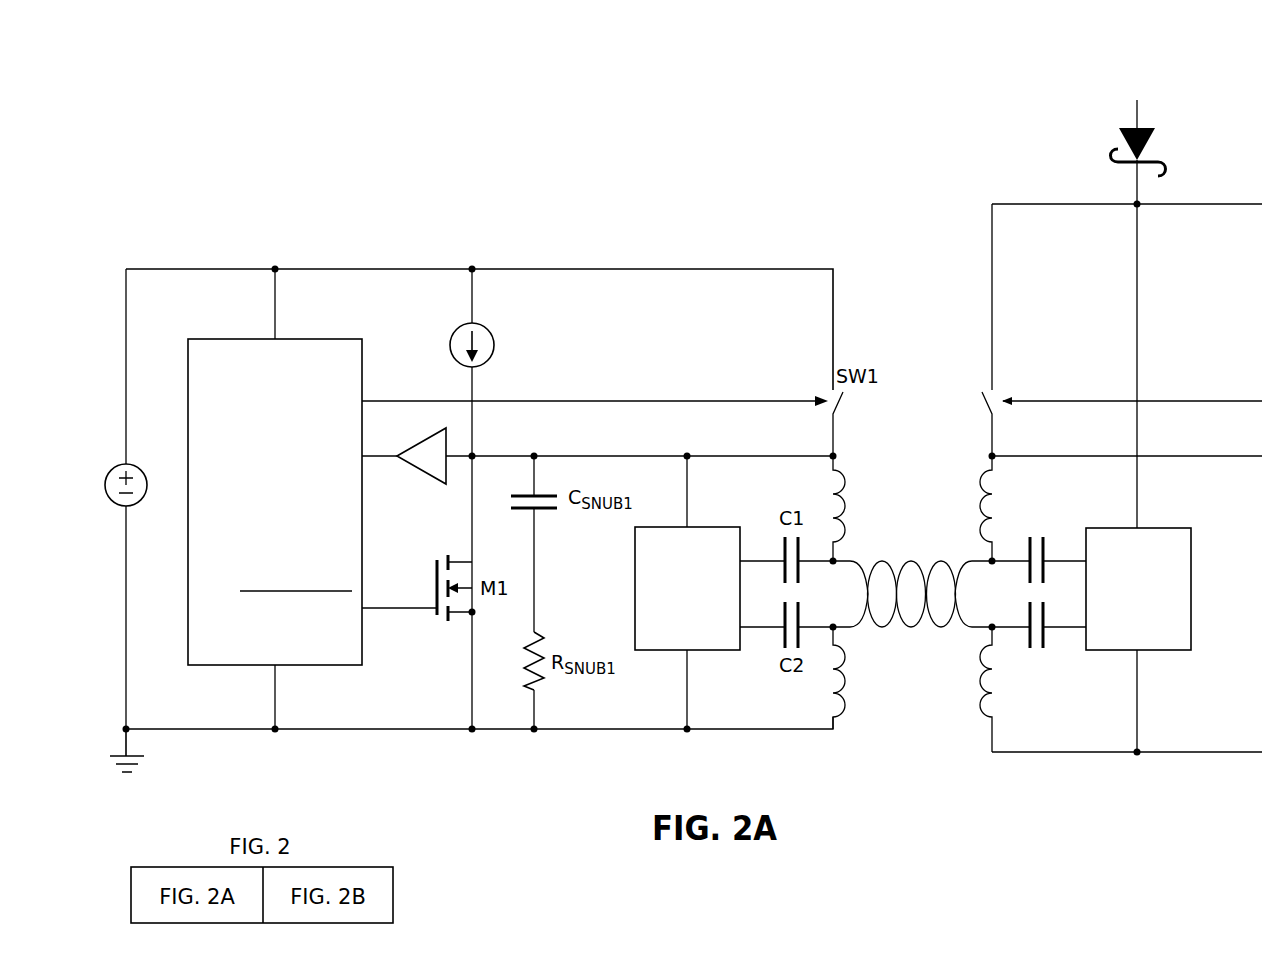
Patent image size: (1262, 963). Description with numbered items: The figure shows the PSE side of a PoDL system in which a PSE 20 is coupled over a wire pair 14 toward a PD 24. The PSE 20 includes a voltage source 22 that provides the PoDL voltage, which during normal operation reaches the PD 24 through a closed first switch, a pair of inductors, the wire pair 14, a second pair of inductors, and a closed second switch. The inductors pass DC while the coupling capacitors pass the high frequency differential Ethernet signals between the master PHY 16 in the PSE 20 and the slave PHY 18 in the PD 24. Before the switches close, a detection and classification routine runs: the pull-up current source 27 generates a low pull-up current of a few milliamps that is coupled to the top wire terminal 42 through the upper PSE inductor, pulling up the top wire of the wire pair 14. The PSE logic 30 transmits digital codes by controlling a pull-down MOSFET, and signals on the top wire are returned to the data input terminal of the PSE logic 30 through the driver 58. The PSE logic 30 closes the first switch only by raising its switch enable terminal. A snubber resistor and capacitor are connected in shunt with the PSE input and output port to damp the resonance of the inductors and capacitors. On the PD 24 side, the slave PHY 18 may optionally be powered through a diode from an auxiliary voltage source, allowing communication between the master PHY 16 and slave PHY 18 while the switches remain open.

The wire pair 14 is at (913, 640).
The master PHY 16 is at (662, 652).
The slave PHY 18 is at (1163, 652).
The PSE 20 is at (482, 204).
The voltage source 22 is at (104, 489).
The PD 24 is at (1198, 170).
The pull-up current source 27 is at (450, 343).
The PSE logic 30 is at (206, 338).
The top wire terminal 42 is at (856, 550).
The driver 58 is at (421, 473).